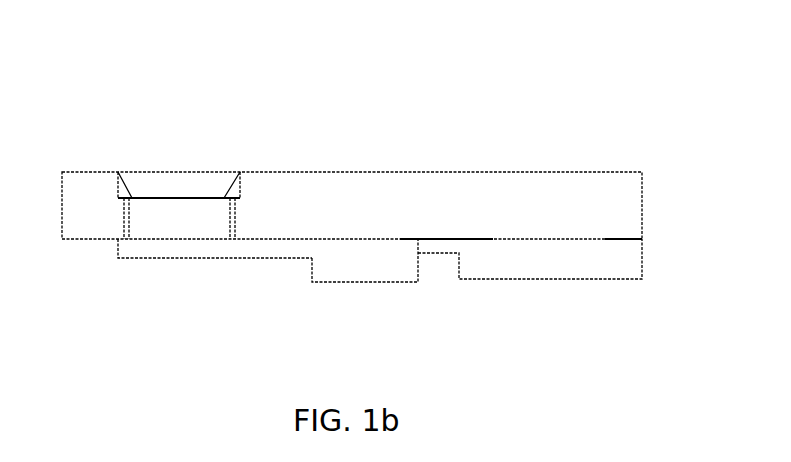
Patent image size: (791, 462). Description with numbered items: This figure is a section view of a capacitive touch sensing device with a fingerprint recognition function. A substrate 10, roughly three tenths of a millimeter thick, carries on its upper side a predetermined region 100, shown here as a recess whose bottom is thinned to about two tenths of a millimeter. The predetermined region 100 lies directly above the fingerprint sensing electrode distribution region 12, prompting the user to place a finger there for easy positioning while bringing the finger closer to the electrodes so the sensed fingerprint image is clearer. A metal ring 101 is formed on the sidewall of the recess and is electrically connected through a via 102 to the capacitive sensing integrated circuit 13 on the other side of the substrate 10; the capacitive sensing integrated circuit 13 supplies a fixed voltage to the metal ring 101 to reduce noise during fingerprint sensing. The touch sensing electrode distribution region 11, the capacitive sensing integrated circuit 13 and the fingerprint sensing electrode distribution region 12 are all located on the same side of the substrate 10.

The substrate 10 is at (373, 192).
The predetermined region 100 is at (178, 198).
The metal ring 101 is at (238, 172).
The via 102 is at (122, 200).
The touch sensing electrode distribution region 11 is at (573, 262).
The fingerprint sensing electrode distribution region 12 is at (158, 250).
The capacitive sensing integrated circuit 13 is at (363, 258).